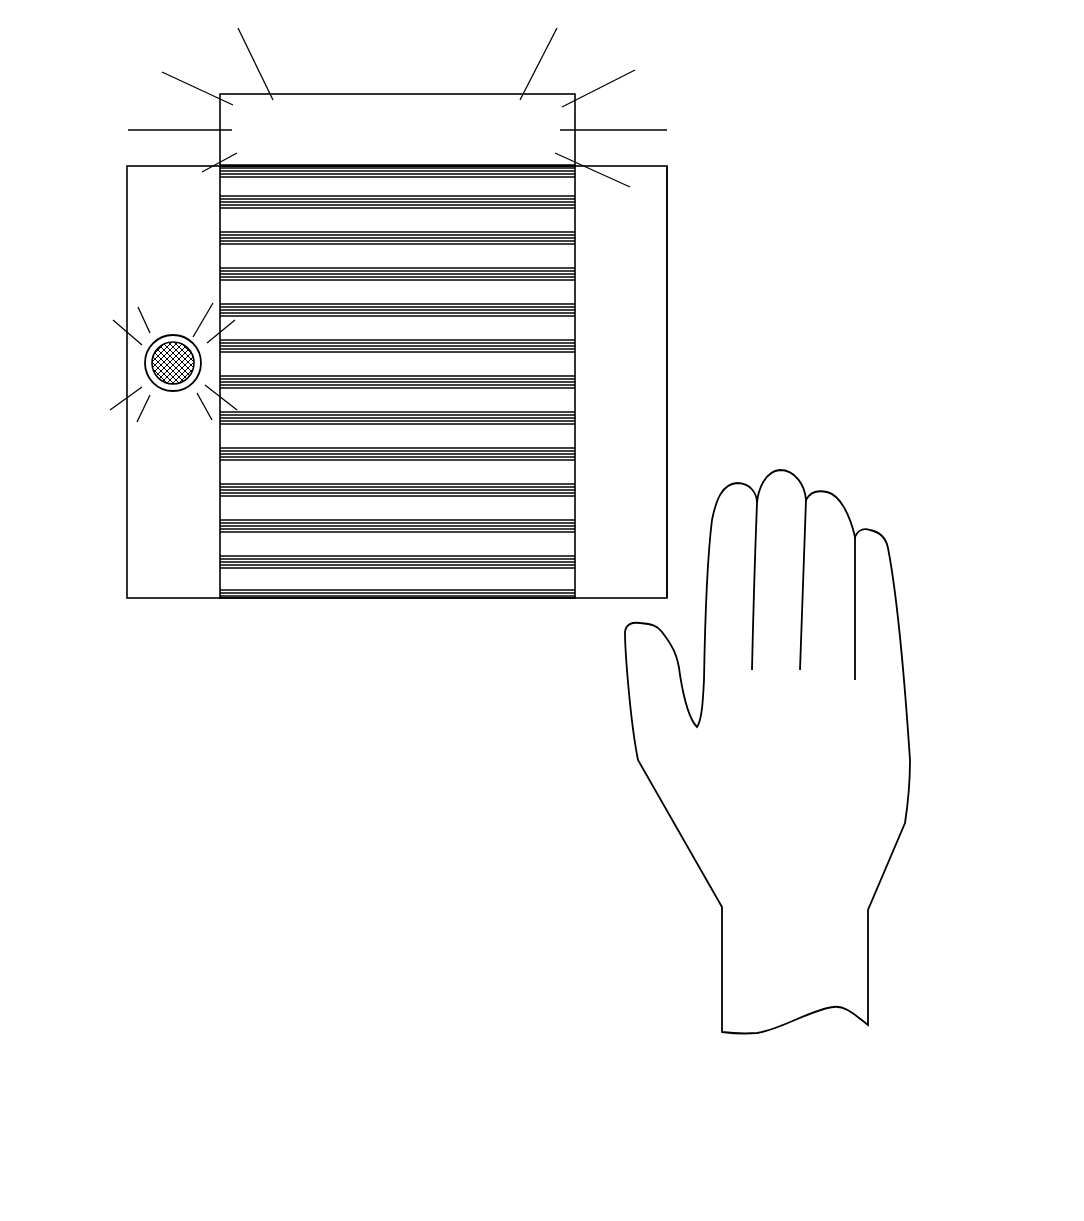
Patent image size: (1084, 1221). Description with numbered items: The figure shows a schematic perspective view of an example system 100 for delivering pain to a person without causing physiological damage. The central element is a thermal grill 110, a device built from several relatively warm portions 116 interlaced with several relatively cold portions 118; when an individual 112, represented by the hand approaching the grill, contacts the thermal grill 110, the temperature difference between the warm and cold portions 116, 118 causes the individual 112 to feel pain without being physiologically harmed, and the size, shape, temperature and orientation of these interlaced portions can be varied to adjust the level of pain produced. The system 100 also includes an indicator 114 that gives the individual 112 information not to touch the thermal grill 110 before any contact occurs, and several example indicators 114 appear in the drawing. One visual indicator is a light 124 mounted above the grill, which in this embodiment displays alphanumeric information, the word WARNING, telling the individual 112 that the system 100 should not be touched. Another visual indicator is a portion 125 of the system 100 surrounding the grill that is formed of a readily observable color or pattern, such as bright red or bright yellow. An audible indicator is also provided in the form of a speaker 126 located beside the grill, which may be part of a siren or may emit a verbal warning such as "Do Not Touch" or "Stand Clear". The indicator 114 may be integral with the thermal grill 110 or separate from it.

The system 100 is at (820, 100).
The thermal grill 110 is at (600, 226).
The individual 112 is at (690, 828).
The indicator 114 is at (400, 93).
The relatively warm portions 116 is at (217, 221).
The relatively cold portions 118 is at (217, 184).
The light 124 is at (470, 115).
The portion 125 is at (643, 395).
The speaker 126 is at (145, 357).